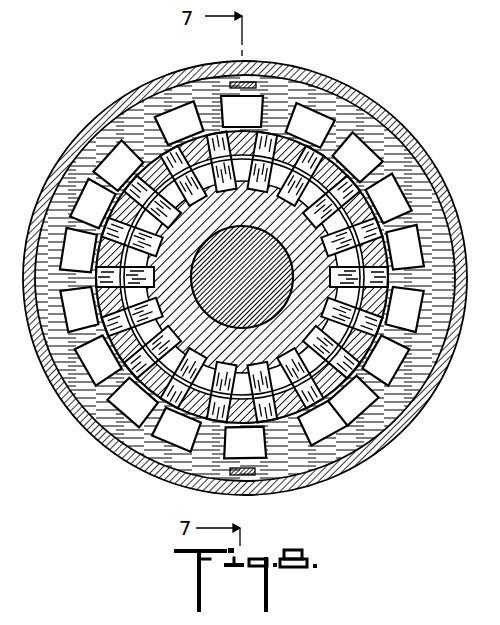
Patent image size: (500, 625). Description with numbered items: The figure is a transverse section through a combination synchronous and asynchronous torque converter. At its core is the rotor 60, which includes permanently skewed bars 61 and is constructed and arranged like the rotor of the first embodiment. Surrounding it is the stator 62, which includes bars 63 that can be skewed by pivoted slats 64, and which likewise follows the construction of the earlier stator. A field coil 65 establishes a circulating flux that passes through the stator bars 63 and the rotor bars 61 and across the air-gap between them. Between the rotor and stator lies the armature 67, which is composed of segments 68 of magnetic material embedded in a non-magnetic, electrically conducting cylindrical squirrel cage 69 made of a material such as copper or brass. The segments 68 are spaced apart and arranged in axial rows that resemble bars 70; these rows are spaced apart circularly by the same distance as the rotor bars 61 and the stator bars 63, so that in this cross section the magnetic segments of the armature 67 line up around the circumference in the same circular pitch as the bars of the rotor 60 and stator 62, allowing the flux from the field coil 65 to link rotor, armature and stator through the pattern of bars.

The rotor 60 is at (440, 240).
The permanently skewed bars 61 is at (112, 362).
The stator 62 is at (325, 97).
The bars 63 is at (360, 134).
The pivoted slats 64 is at (248, 80).
The field coil 65 is at (178, 117).
The armature 67 is at (188, 418).
The segments 68 is at (293, 323).
The squirrel cage 69 is at (113, 385).
The bars 70 is at (132, 170).